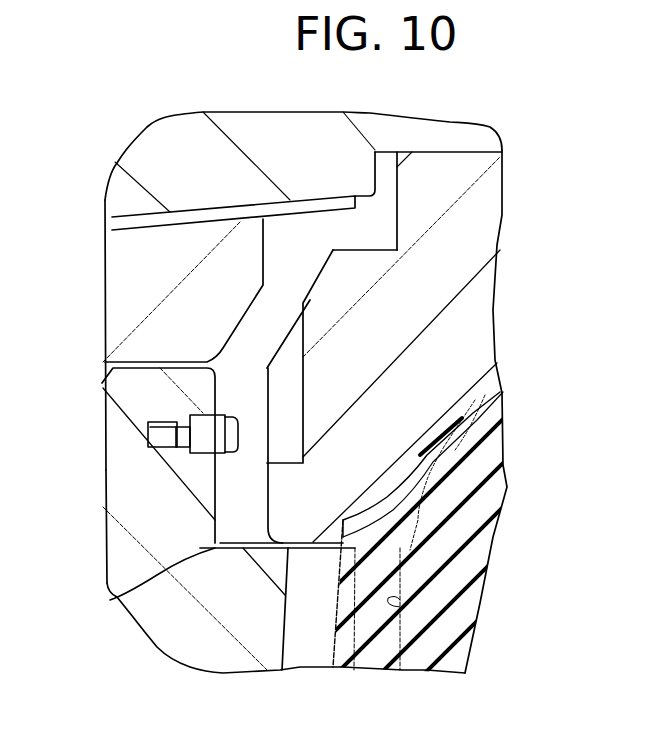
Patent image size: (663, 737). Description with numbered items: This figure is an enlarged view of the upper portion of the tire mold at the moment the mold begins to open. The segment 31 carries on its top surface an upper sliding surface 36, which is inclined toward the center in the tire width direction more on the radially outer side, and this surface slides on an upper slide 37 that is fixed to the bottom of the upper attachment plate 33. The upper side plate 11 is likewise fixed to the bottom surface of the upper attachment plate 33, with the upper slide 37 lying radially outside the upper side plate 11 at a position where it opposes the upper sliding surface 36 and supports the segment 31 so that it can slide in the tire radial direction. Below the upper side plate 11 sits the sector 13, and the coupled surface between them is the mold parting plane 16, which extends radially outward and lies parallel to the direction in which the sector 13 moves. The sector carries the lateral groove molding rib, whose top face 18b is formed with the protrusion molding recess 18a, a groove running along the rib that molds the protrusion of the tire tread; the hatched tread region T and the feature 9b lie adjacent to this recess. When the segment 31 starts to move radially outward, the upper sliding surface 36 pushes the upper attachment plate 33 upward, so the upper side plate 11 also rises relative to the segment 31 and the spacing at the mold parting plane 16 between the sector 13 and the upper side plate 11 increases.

The upper attachment plate 33 is at (157, 152).
The upper sliding surface 36 is at (142, 213).
The upper slide 37 is at (322, 217).
The segment 31 is at (138, 281).
The upper side plate 11 is at (470, 300).
The sector 13 is at (143, 508).
The mold parting plane 16 is at (110, 600).
The top face 18b is at (447, 463).
The seal section T is at (473, 552).
The mounting portion 9b is at (400, 607).
The protrusion molding recess 18a is at (350, 650).